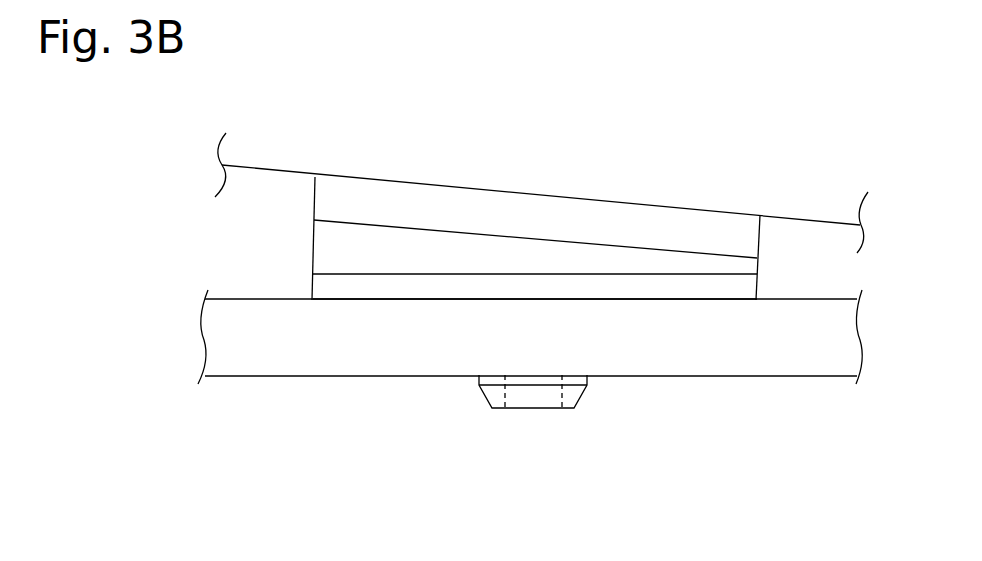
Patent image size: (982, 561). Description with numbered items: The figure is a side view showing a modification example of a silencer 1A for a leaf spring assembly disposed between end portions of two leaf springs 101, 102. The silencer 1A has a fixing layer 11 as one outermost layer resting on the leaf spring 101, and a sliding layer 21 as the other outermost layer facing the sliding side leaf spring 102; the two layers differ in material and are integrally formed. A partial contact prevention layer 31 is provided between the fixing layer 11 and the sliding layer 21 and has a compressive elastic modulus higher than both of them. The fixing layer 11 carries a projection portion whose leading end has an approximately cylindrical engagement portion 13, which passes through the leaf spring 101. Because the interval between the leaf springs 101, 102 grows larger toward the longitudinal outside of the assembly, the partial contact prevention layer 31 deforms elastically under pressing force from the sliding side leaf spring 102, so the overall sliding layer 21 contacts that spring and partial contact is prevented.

The leaf spring 102 is at (353, 167).
The sliding layer 21 is at (587, 220).
The partial contact prevention layer 31 is at (330, 253).
The fixing layer 11 is at (742, 290).
The leaf spring 101 is at (353, 350).
The engagement portion 13 is at (482, 405).
The silencer 1A is at (582, 420).